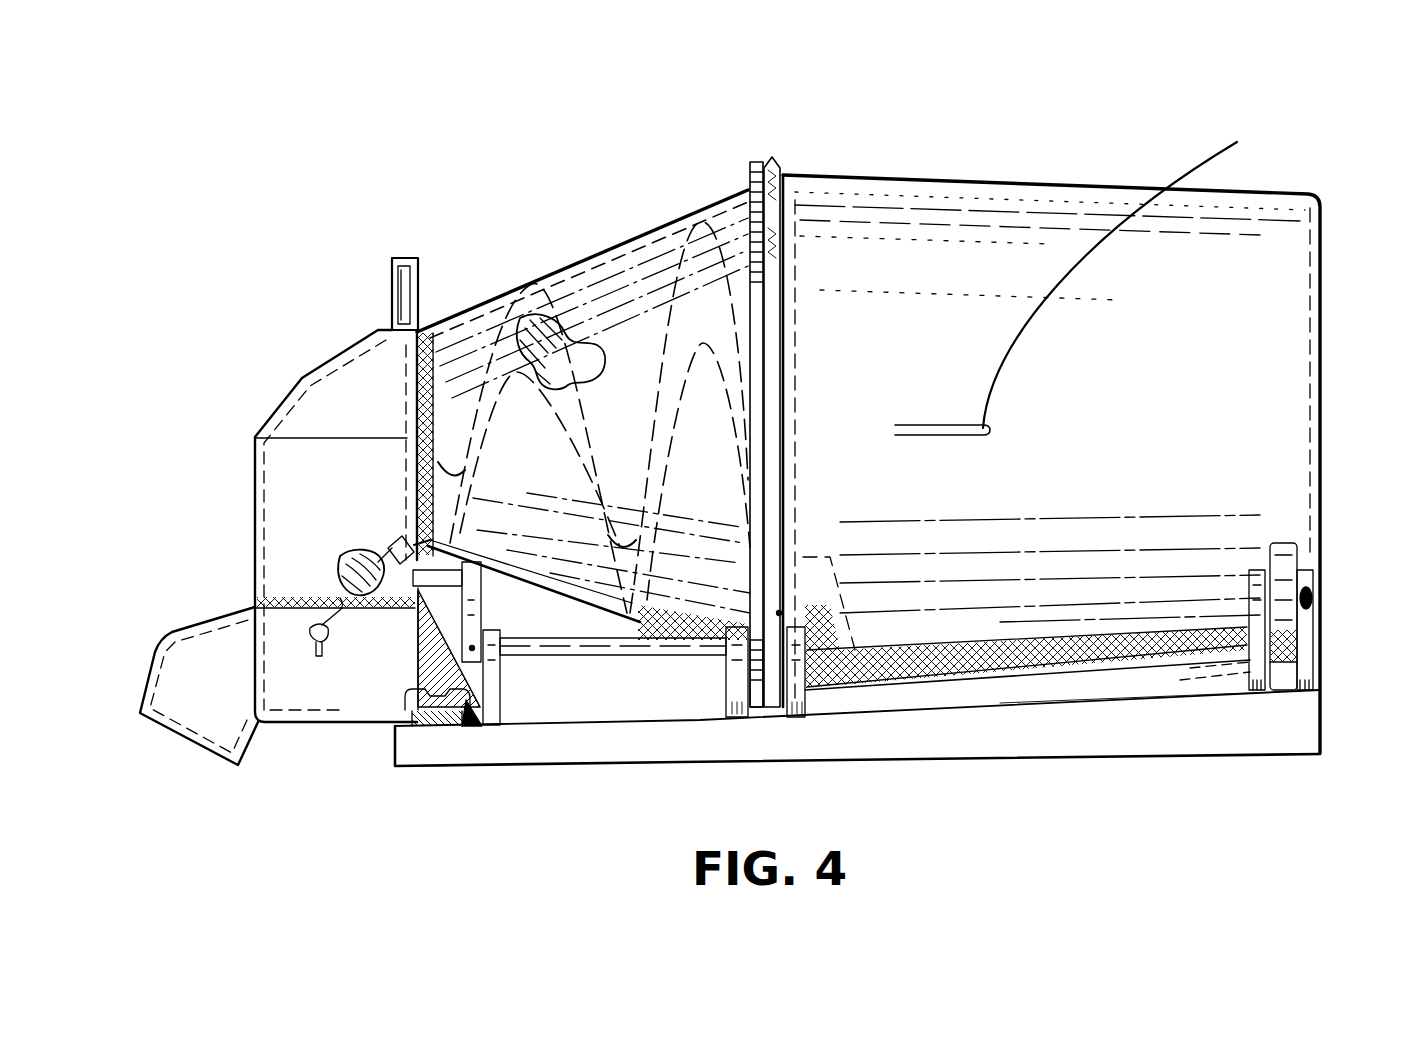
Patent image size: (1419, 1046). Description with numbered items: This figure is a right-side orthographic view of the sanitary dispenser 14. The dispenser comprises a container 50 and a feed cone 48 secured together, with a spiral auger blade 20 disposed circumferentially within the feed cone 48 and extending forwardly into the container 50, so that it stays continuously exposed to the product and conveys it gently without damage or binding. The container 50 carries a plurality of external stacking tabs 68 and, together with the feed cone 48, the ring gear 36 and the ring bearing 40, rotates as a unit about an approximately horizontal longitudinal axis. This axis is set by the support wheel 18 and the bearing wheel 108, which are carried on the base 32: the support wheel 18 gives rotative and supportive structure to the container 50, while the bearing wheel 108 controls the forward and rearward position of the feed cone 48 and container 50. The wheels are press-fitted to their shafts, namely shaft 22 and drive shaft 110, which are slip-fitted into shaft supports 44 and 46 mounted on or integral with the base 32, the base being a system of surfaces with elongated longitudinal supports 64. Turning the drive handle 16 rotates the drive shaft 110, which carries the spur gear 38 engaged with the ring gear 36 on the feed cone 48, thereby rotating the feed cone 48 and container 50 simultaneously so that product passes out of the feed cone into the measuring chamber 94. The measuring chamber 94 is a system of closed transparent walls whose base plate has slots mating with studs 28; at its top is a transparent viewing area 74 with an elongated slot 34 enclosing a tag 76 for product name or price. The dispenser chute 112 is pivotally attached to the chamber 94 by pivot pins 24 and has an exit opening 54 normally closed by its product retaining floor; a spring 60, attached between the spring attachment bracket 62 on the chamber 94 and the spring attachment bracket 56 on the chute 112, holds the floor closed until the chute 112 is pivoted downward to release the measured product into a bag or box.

The sanitary dispenser 14 is at (219, 189).
The drive handle 16 is at (455, 724).
The support wheel 18 is at (1283, 545).
The auger blade 20 is at (545, 345).
The shaft 22 is at (1310, 600).
The pivot pin 24 is at (407, 692).
The stud 28 is at (404, 767).
The base 32 is at (405, 770).
The elongated slot 34 is at (393, 286).
The ring gear 36 is at (748, 172).
The spur gear 38 is at (757, 663).
The ring bearing 40 is at (770, 160).
The shaft support 44 is at (495, 698).
The shaft support 46 is at (1215, 697).
The feed cone 48 is at (590, 272).
The container 50 is at (922, 195).
The exit opening 54 is at (140, 716).
The spring attachment bracket 56 is at (318, 648).
The spring 60 is at (340, 564).
The spring attachment bracket 62 is at (408, 528).
The longitudinal support 64 is at (1125, 682).
The external stacking tab 68 is at (983, 178).
The transparent viewing area 74 is at (390, 310).
The tag 76 is at (410, 296).
The measuring chamber 94 is at (255, 490).
The bearing wheel 108 is at (780, 613).
The drive shaft 110 is at (575, 648).
The dispenser chute 112 is at (174, 632).